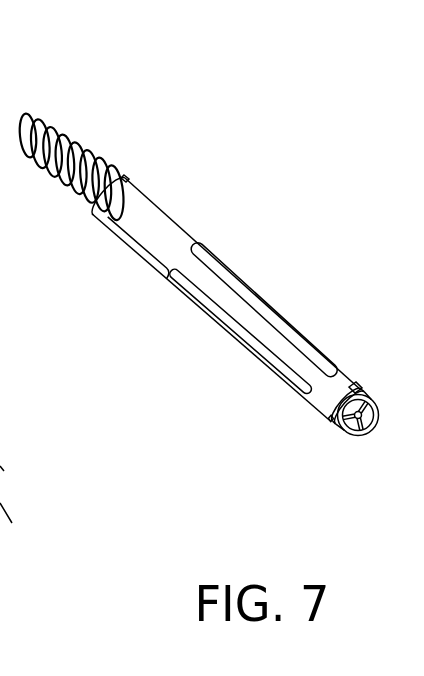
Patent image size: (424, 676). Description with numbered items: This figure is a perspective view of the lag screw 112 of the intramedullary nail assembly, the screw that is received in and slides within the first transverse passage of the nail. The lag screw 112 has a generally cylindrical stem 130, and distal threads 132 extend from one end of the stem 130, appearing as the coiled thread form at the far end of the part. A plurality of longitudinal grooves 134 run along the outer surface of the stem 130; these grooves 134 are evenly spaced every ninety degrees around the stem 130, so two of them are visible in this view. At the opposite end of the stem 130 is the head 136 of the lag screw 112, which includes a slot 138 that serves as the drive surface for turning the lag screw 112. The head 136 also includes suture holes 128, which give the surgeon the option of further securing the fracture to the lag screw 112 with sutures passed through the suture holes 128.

The lag screw 112 is at (137, 116).
The suture holes 128 is at (328, 413).
The stem 130 is at (186, 228).
The distal threads 132 is at (51, 178).
The longitudinal grooves 134 is at (223, 312).
The head 136 is at (372, 396).
The slot 138 is at (358, 436).